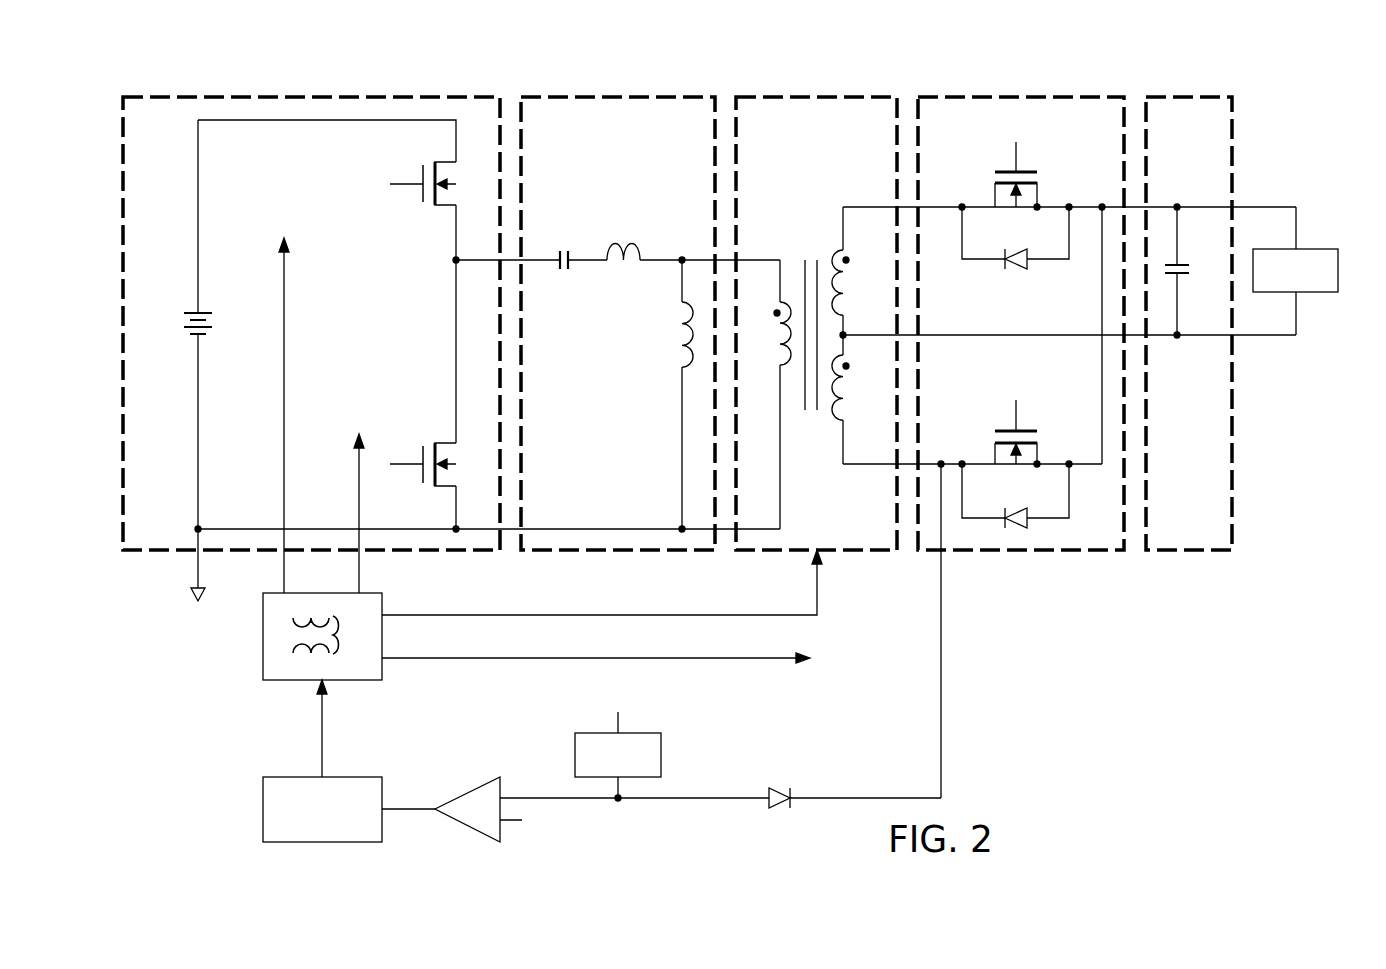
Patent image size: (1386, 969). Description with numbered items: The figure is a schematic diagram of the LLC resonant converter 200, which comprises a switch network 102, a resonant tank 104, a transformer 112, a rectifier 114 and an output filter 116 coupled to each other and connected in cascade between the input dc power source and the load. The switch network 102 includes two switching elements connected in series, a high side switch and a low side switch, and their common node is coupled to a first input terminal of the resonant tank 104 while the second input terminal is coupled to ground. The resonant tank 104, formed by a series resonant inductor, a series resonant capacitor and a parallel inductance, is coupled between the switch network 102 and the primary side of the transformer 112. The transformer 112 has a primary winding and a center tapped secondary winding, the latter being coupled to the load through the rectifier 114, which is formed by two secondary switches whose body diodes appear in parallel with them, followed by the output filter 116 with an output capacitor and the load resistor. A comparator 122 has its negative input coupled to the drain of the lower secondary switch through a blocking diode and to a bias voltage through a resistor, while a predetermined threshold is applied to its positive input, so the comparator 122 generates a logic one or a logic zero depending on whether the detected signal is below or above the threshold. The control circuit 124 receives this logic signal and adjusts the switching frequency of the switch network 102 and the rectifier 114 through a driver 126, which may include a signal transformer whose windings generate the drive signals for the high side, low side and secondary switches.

The LLC resonant converter 200 is at (923, 72).
The switch network 102 is at (342, 166).
The resonant tank 104 is at (635, 166).
The transformer 112 is at (830, 166).
The rectifier 114 is at (1098, 166).
The output filter 116 is at (1206, 166).
The comparator 122 is at (468, 827).
The control circuit 124 is at (263, 820).
The driver 126 is at (263, 638).